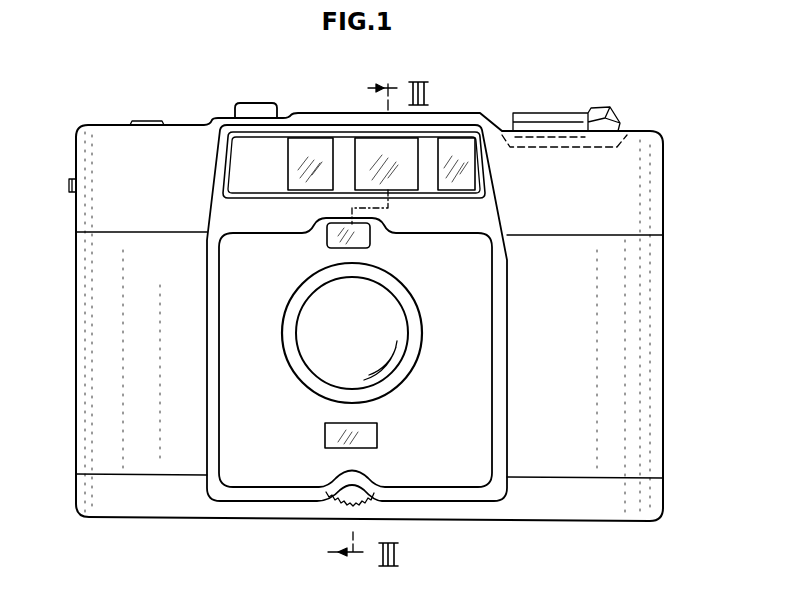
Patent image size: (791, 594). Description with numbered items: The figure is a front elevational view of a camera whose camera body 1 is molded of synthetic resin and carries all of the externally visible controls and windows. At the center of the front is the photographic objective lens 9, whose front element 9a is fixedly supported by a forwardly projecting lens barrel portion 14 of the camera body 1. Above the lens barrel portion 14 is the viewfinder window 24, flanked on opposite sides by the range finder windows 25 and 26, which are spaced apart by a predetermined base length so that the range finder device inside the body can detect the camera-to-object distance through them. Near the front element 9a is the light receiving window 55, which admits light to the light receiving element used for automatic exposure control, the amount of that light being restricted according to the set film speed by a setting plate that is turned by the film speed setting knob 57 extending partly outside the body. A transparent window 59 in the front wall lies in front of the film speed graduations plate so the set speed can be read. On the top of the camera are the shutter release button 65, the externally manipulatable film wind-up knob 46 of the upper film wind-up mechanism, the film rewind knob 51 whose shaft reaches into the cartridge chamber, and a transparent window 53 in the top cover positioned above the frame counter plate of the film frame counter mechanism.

The camera body 1 is at (85, 341).
The photographic objective lens 9 is at (310, 333).
The front element 9a is at (344, 341).
The lens barrel portion 14 is at (410, 360).
The viewfinder window 24 is at (370, 143).
The range finder window 25 is at (308, 142).
The range finder window 26 is at (458, 148).
The film wind-up knob 46 is at (68, 185).
The film rewind knob 51 is at (550, 117).
The transparent window 53 is at (137, 120).
The light receiving window 55 is at (333, 240).
The film speed setting knob 57 is at (363, 497).
The transparent window 59 is at (325, 437).
The shutter release button 65 is at (246, 107).